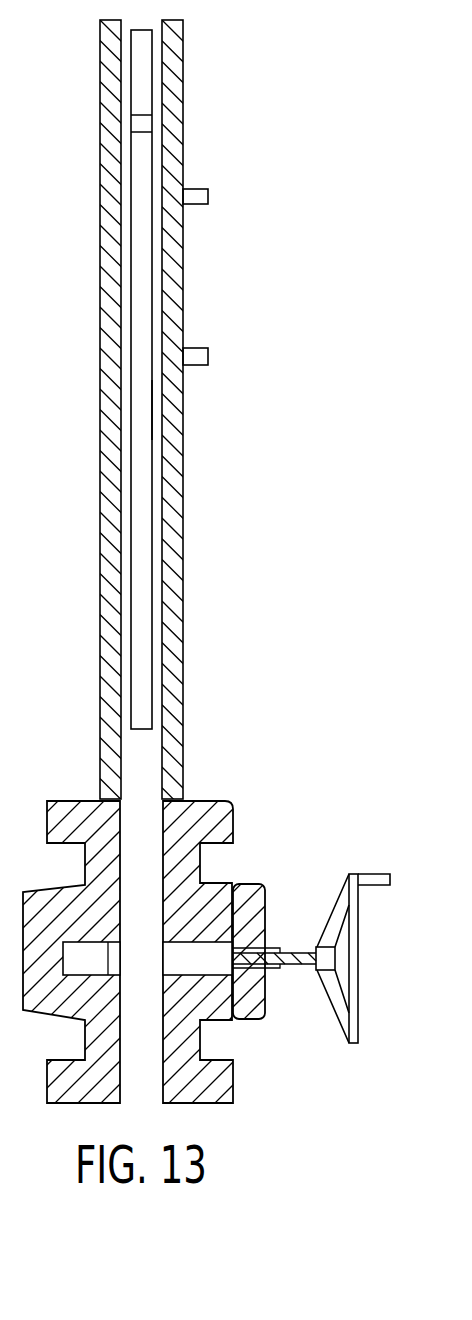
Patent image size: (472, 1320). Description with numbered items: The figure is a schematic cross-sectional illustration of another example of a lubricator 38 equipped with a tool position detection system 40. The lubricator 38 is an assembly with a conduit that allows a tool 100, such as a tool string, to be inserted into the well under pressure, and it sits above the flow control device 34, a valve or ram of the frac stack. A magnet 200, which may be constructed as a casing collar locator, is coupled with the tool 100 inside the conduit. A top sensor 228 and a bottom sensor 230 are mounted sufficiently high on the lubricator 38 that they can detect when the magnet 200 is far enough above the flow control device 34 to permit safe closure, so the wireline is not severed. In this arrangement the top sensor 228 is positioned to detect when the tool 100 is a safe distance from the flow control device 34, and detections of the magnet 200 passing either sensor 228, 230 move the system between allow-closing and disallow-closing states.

The flow control device 34 is at (238, 871).
The lubricator 38 is at (99, 373).
The tool position detection system 40 is at (194, 173).
The tool 100 is at (152, 408).
The magnet 200 is at (142, 123).
The top sensor 228 is at (208, 197).
The bottom sensor 230 is at (208, 357).